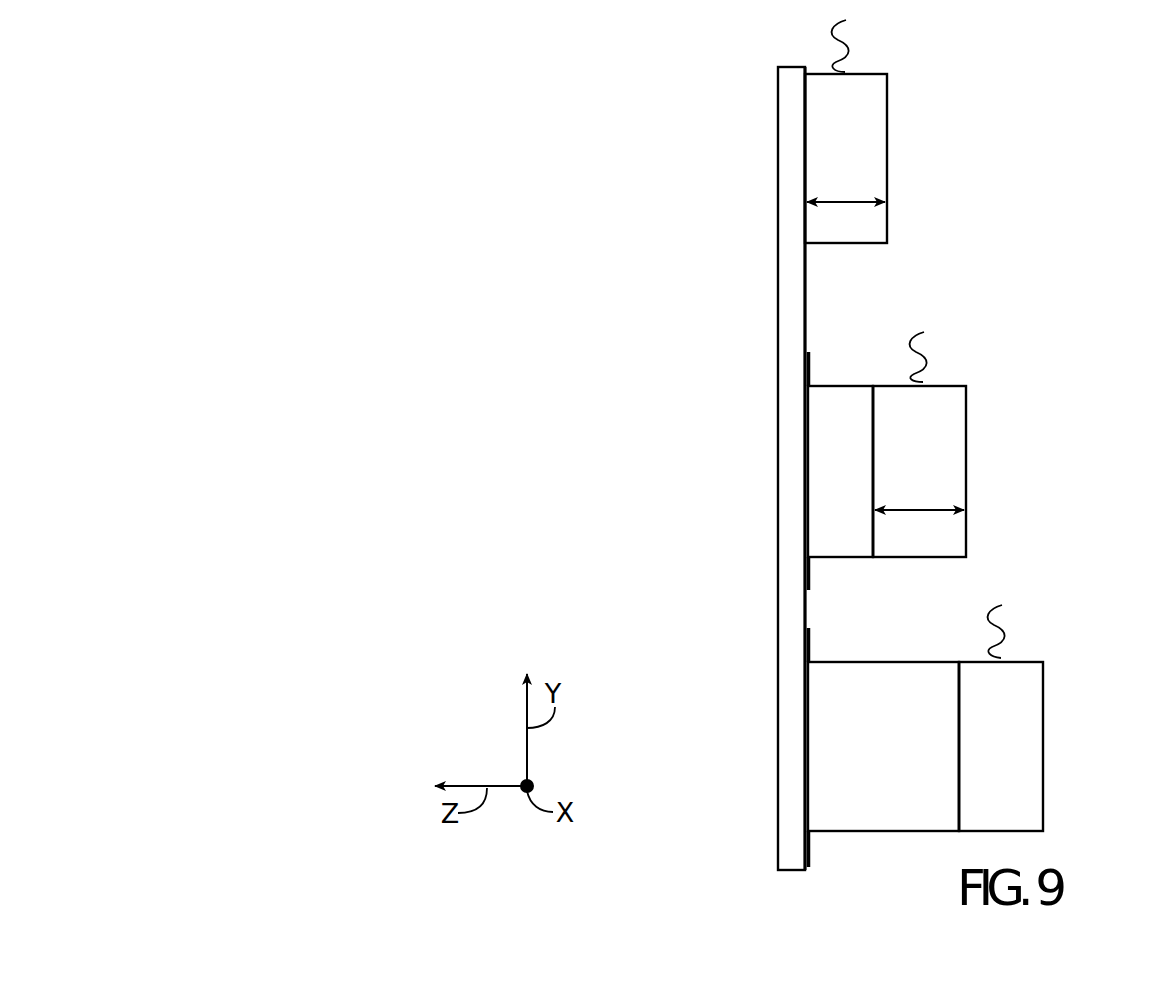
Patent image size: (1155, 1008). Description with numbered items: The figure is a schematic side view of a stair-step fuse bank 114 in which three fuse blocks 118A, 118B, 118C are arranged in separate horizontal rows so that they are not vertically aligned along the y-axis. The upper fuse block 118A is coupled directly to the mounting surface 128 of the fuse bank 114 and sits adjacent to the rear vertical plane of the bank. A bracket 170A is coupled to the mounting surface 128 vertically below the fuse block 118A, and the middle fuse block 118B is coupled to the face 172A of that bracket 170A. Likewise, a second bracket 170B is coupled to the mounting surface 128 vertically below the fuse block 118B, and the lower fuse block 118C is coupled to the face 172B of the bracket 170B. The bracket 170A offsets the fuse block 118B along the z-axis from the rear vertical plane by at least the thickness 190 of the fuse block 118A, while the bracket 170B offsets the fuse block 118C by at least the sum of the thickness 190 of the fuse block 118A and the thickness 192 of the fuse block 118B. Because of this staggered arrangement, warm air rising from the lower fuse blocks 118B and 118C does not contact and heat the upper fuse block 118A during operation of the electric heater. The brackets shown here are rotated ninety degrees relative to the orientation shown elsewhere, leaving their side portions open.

The stair-step fuse bank 114 is at (749, 61).
The mounting surface 128 is at (810, 293).
The fuse block 118A is at (818, 151).
The fuse block 118B is at (899, 429).
The fuse block 118C is at (974, 701).
The thickness 190 is at (860, 204).
The thickness 192 is at (940, 513).
The bracket 170A is at (845, 385).
The bracket 170B is at (845, 662).
The face 172A is at (877, 471).
The face 172B is at (963, 746).